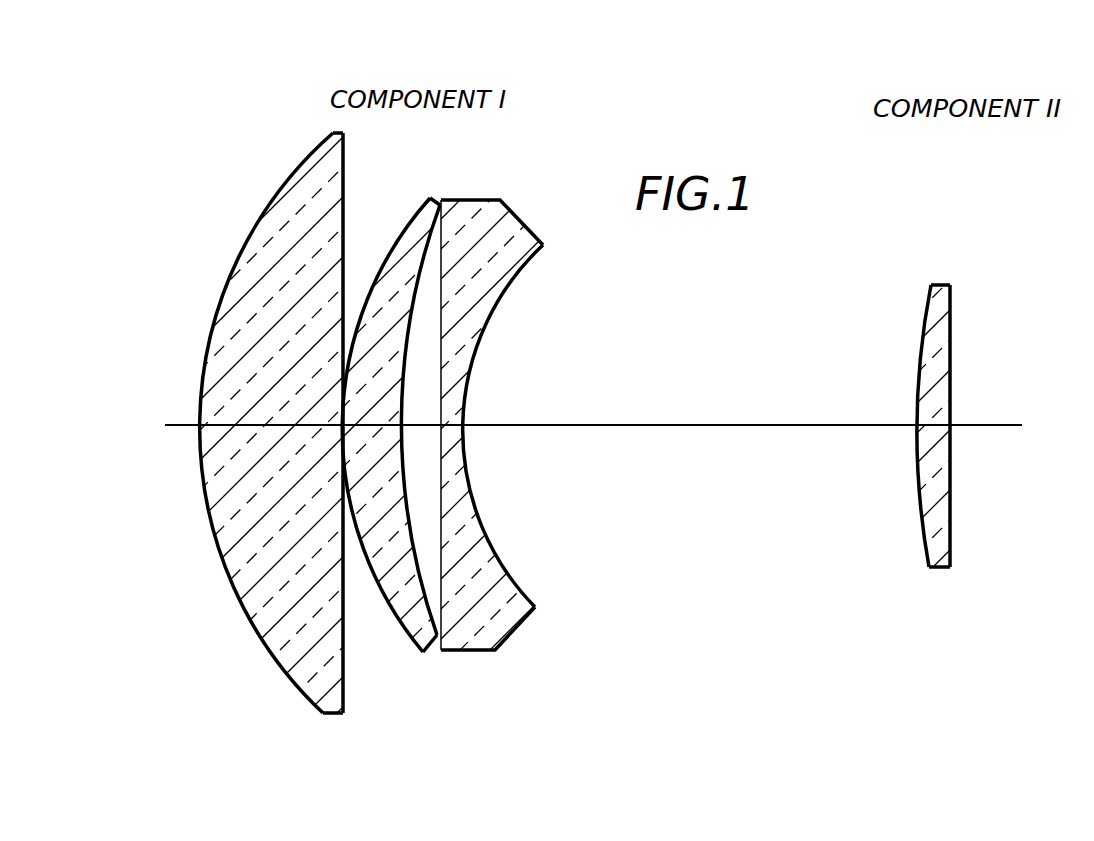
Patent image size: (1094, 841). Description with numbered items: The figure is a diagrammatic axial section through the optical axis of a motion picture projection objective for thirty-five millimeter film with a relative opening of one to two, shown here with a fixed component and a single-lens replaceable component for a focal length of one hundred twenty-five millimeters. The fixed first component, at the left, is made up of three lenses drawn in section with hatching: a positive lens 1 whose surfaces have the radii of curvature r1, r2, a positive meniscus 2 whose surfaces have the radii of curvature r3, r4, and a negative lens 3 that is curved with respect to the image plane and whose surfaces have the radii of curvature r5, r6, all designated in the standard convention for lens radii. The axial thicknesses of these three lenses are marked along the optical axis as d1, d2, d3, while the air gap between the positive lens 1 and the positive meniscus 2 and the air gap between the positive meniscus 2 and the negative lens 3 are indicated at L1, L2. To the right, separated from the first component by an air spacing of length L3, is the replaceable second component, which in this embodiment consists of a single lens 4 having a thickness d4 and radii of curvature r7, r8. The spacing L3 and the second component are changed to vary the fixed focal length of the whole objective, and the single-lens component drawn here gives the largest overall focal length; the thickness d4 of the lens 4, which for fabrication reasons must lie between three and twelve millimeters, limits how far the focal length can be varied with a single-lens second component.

The positive lens 1 is at (246, 414).
The positive meniscus 2 is at (419, 420).
The negative lens 3 is at (507, 394).
The single lens 4 is at (944, 404).
The radius of curvature r1 is at (240, 243).
The radius of curvature r2 is at (340, 243).
The radius of curvature r3 is at (386, 257).
The radius of curvature r4 is at (420, 245).
The radius of curvature r5 is at (450, 235).
The radius of curvature r6 is at (522, 250).
The radius of curvature r7 is at (928, 298).
The radius of curvature r8 is at (955, 294).
The thickness d1 is at (240, 432).
The thickness d2 is at (423, 440).
The thickness d3 is at (460, 440).
The thickness d4 is at (930, 427).
The air gap L1 is at (330, 533).
The air gap L2 is at (463, 493).
The air gap L3 is at (622, 428).